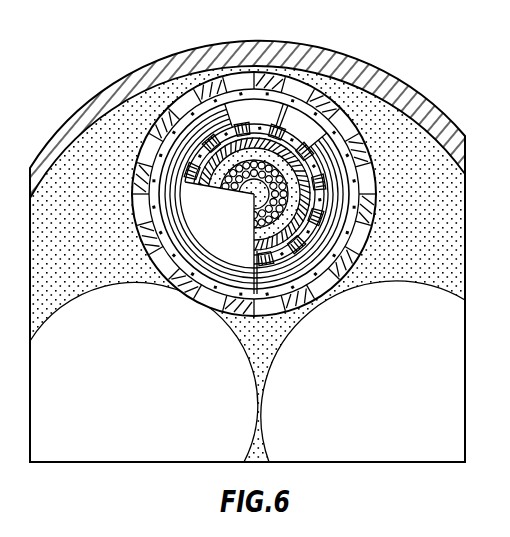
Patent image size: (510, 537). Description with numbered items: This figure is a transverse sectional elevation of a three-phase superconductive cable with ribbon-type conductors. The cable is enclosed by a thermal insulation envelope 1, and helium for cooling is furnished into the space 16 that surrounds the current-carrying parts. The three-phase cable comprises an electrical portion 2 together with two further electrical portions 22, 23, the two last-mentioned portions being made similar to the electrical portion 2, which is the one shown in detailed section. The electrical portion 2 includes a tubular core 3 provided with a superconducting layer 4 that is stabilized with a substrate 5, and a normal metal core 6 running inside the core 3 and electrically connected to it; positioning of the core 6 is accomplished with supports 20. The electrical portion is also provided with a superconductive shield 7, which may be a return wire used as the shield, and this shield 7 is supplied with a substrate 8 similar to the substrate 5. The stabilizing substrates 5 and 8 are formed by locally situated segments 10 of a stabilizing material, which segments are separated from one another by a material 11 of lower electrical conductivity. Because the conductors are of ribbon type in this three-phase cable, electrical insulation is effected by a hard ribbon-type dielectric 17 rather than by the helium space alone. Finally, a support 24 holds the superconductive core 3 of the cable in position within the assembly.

The thermal insulation envelope 1 is at (64, 134).
The space 16 is at (110, 125).
The electrical portion 2 is at (213, 240).
The core 3 is at (257, 120).
The superconducting layer 4 is at (310, 150).
The substrate 5 is at (288, 136).
The normal metal core 6 is at (327, 169).
The superconductive shield 7 is at (353, 240).
The substrate 8 is at (204, 90).
The segments 10 is at (203, 80).
The material of lower electrical conductivity 11 is at (291, 320).
The hard ribbon-type dielectric 17 is at (324, 186).
The supports 20 is at (267, 103).
The support 24 is at (289, 238).
The electrical portion 22 is at (417, 438).
The electrical portion 23 is at (115, 430).